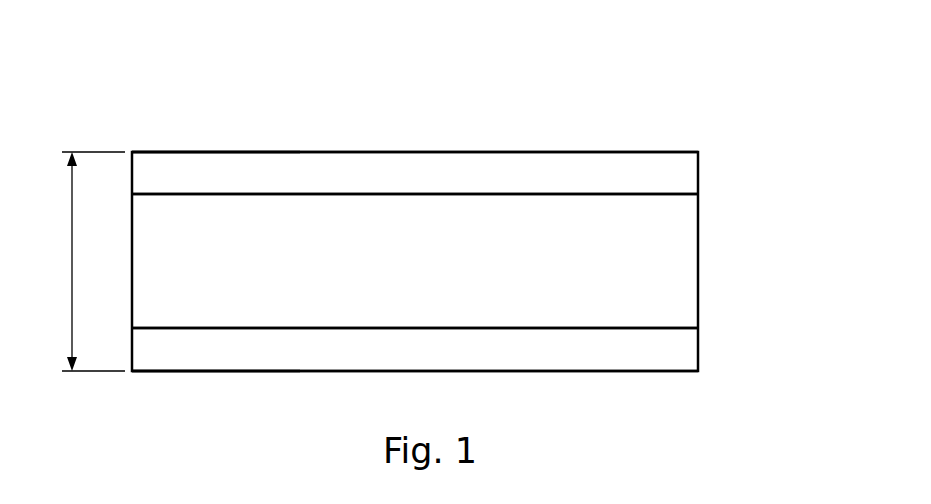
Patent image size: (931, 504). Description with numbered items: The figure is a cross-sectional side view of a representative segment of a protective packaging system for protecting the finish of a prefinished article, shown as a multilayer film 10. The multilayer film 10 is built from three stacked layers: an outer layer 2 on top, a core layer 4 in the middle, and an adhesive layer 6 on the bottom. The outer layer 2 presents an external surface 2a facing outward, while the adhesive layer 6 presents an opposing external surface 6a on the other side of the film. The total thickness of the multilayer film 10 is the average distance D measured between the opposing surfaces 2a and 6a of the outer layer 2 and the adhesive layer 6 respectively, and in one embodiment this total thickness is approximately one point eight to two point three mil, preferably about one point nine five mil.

The multilayer film 10 is at (538, 126).
The outer layer 2 is at (683, 172).
The external surface of outer layer 2a is at (163, 146).
The core layer 4 is at (678, 260).
The adhesive layer 6 is at (680, 343).
The external surface of adhesive layer 6a is at (150, 365).
The average distance D is at (85, 261).